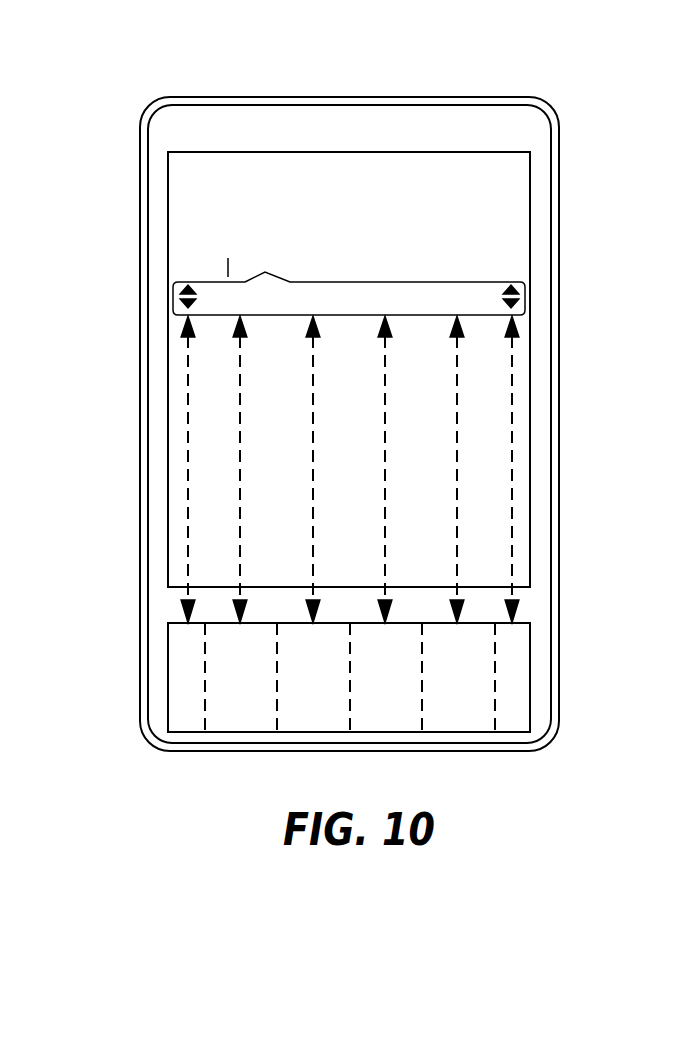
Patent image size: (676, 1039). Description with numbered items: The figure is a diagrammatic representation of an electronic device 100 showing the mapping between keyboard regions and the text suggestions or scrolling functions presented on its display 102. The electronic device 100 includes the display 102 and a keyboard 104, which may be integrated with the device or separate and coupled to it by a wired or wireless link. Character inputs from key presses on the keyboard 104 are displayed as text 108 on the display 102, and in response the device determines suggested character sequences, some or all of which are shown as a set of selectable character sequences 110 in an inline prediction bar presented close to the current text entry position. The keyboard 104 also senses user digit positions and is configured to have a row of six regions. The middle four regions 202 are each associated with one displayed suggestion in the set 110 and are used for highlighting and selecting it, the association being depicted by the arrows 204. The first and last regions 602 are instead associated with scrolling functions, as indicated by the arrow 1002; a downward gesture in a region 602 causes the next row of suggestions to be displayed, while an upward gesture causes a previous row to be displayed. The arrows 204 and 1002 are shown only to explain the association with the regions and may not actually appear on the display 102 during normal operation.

The electronic device 100 is at (140, 133).
The display 102 is at (168, 262).
The keyboard 104 is at (168, 650).
The text 108 is at (515, 165).
The set of selectable character sequences 110 is at (175, 313).
The region 202 is at (222, 692).
The arrows 204 is at (240, 488).
The regions 602 is at (188, 697).
The arrow 1002 is at (187, 403).